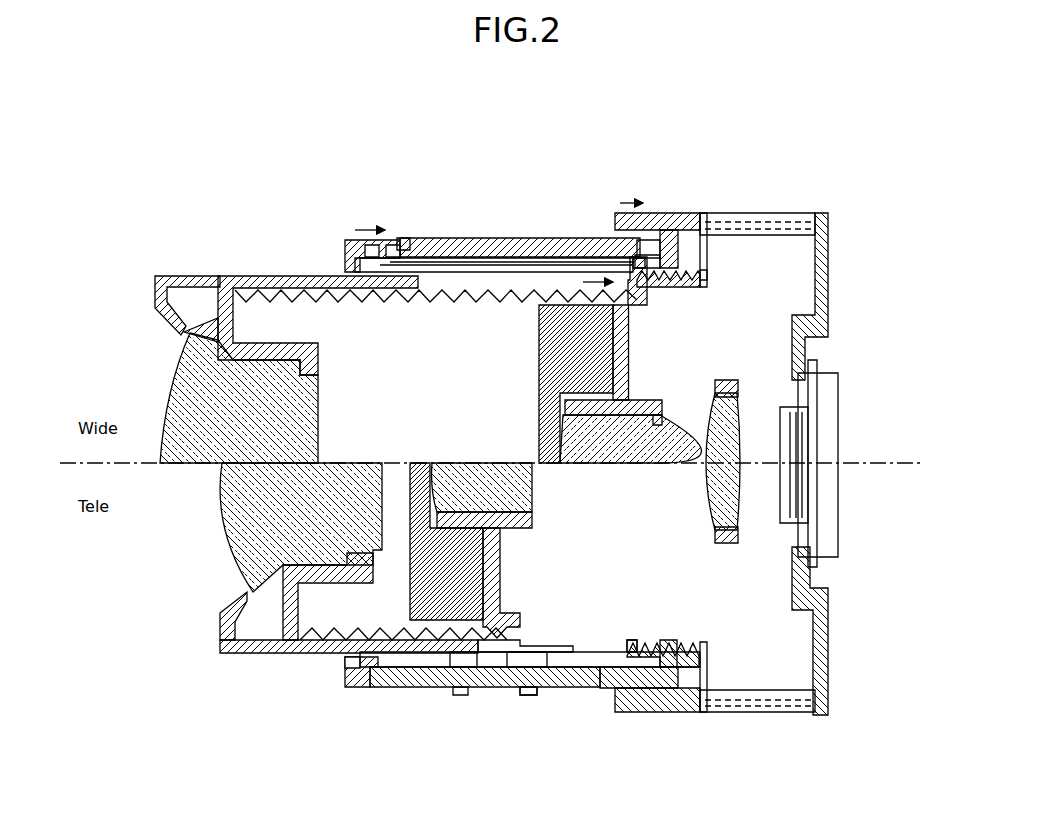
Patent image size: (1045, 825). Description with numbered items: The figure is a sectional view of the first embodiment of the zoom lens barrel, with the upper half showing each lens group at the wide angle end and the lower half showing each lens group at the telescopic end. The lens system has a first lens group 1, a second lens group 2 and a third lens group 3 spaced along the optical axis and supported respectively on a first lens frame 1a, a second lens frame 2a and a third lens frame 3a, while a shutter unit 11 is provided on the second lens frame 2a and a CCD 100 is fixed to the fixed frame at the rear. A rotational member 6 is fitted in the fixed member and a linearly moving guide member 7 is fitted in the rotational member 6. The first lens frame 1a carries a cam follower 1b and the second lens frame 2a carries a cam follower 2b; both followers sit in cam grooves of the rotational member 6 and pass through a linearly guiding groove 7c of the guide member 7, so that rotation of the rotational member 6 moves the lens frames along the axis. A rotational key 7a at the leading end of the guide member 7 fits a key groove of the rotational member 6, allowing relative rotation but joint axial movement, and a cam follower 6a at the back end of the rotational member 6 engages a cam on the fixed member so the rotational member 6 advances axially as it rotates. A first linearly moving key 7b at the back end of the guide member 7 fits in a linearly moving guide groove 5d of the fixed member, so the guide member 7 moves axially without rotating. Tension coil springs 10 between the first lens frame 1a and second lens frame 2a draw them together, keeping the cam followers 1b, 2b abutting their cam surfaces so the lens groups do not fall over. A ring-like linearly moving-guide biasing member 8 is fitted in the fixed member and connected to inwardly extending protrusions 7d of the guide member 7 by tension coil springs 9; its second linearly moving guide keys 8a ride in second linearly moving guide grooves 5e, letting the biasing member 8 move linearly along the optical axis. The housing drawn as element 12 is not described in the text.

The first lens group 1 is at (250, 508).
The first lens frame 1a is at (236, 274).
The cam follower 1b is at (400, 240).
The second lens group 2 is at (501, 490).
The second lens frame 2a is at (627, 336).
The cam follower 2b is at (527, 695).
The third lens group 3 is at (740, 418).
The third lens frame 3a is at (725, 545).
The linearly moving guide groove 5d is at (775, 226).
The second linearly moving guide groove 5e is at (802, 215).
The rotational member 6 is at (432, 240).
The cam follower 6a is at (643, 692).
The linearly moving guide member 7 is at (347, 254).
The rotational key 7a is at (397, 240).
The first linearly moving key 7b is at (670, 222).
The linearly guiding groove 7c is at (510, 240).
The protrusion 7d is at (630, 647).
The linearly moving-guide biasing member 8 is at (723, 242).
The second linearly moving guide key 8a is at (715, 222).
The tension coil spring 9 is at (653, 212).
The tension coil spring 10 is at (475, 290).
The shutter unit 11 is at (560, 320).
The housing 12 is at (830, 272).
The CCD 100 is at (829, 538).